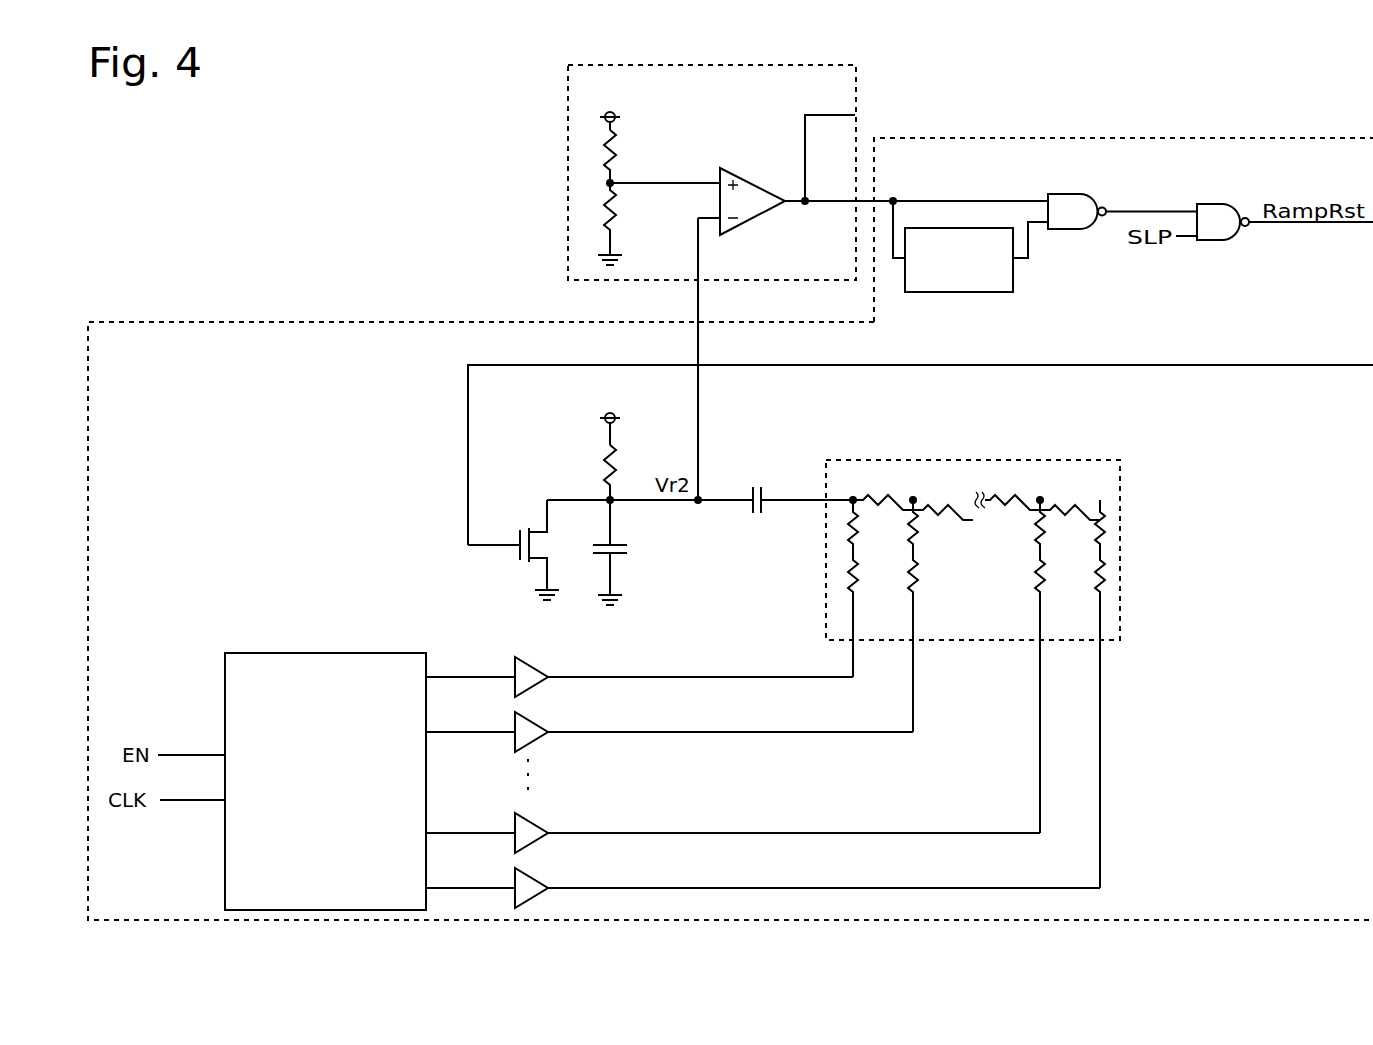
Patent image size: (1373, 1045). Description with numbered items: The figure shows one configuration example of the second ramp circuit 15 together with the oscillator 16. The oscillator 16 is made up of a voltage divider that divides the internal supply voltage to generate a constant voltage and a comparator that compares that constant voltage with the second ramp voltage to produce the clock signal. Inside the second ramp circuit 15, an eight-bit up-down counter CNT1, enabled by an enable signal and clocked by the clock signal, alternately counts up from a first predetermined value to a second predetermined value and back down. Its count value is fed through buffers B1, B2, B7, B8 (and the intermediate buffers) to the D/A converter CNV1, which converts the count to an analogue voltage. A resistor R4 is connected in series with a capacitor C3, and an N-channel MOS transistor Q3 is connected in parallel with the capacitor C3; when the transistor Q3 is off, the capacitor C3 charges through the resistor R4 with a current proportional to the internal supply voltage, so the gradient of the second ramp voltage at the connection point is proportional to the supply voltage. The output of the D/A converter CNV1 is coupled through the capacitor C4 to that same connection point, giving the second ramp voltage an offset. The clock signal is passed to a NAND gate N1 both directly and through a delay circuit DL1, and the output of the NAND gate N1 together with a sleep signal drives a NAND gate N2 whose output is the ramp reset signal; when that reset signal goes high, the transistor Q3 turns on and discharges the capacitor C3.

The second ramp circuit 15 is at (1133, 138).
The oscillator 16 is at (711, 65).
The NAND gate N1 is at (1071, 194).
The NAND gate N2 is at (1216, 204).
The delay circuit DL1 is at (958, 293).
The MOS transistor Q3 is at (516, 570).
The resistor R4 is at (623, 470).
The capacitor C3 is at (632, 550).
The capacitor C4 is at (759, 480).
The D/A converter CNV1 is at (975, 460).
The up-down counter CNT1 is at (329, 653).
The buffer B1 is at (538, 668).
The buffer B2 is at (538, 723).
The buffer B7 is at (538, 824).
The buffer B8 is at (538, 879).